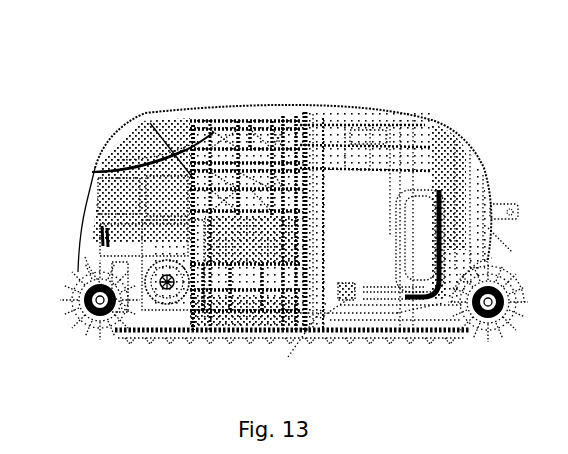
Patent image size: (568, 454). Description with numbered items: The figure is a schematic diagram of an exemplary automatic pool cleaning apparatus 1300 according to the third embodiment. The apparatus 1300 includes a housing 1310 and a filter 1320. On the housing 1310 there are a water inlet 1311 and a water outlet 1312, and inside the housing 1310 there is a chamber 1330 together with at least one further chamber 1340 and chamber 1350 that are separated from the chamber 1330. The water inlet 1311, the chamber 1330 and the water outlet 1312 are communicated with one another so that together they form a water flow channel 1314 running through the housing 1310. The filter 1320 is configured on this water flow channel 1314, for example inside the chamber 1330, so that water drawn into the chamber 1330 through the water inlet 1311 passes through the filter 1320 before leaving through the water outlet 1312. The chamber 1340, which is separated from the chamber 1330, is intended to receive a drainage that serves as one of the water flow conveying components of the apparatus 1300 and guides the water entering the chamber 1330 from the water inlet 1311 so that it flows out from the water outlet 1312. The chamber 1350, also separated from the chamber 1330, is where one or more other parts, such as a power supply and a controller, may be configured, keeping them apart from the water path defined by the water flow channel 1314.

The automatic pool cleaning apparatus 1300 is at (416, 62).
The housing 1310 is at (102, 158).
The water inlet 1311 is at (350, 335).
The water outlet 1312 is at (227, 127).
The water flow channel 1314 is at (282, 110).
The filter 1320 is at (446, 306).
The chamber 1330 is at (367, 218).
The chamber 1340 is at (178, 113).
The chamber 1350 is at (133, 115).